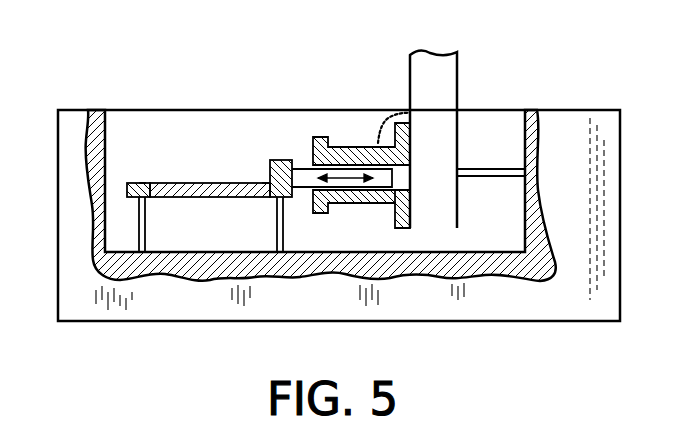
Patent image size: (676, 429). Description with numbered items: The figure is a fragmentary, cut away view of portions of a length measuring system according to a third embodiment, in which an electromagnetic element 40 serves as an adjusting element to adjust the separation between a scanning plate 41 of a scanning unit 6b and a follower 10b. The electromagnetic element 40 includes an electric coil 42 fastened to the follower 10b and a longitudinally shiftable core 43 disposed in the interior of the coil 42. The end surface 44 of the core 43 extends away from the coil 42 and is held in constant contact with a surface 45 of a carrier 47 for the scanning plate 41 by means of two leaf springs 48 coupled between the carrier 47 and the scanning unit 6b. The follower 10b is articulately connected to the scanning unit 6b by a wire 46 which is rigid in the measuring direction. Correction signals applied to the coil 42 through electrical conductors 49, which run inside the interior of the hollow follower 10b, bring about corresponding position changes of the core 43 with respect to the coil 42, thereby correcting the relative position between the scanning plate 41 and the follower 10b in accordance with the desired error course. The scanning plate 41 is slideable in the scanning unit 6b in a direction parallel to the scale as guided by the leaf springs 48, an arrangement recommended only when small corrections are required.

The scanning unit 6b is at (553, 300).
The follower 10b is at (457, 77).
The electromagnetic element 40 is at (363, 206).
The scanning plate 41 is at (225, 198).
The electric coil 42 is at (387, 198).
The core 43 is at (345, 180).
The end surface of the core 44 is at (286, 160).
The surface of the carrier 45 is at (294, 192).
The wire 46 is at (485, 177).
The carrier 47 is at (141, 183).
The leaf springs 48 is at (147, 228).
The electrical conductors 49 is at (378, 143).